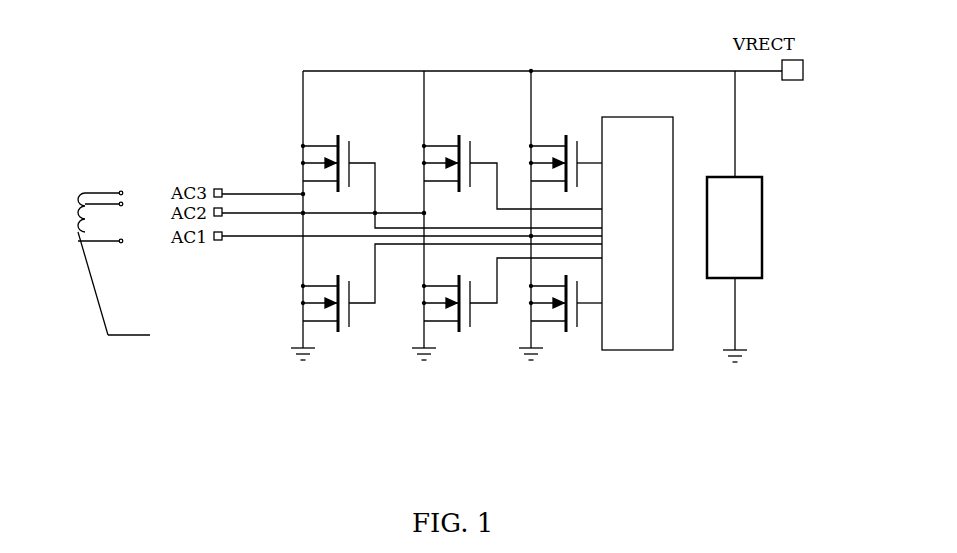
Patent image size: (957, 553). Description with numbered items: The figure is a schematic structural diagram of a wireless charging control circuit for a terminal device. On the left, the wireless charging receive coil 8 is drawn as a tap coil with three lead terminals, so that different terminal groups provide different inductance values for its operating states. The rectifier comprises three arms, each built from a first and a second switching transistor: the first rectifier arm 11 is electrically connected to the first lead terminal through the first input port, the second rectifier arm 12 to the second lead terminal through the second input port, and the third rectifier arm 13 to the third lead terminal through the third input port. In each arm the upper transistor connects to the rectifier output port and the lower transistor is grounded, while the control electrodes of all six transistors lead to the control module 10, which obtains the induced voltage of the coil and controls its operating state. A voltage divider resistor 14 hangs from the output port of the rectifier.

The wireless charging receive coil 8 is at (114, 258).
The control module 10 is at (670, 270).
The first rectifier arm 11 is at (562, 182).
The second rectifier arm 12 is at (497, 182).
The third rectifier arm 13 is at (436, 182).
The voltage divider resistor 14 is at (776, 216).